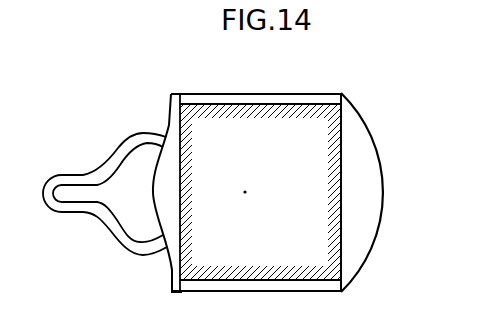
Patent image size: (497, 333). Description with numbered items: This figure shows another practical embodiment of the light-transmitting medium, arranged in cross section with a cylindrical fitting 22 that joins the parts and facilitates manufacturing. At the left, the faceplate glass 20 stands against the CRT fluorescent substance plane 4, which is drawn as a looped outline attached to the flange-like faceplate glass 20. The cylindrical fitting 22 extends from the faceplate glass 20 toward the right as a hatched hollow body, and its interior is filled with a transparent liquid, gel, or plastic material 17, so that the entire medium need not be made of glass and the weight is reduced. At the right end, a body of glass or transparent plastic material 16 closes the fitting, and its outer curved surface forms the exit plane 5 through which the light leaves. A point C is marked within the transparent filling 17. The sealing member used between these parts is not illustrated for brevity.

The CRT fluorescent substance plane 4 is at (152, 192).
The exit plane 5 is at (369, 128).
The glass or transparent plastic material 16 is at (350, 117).
The transparent liquid, gel, or plastic material 17 is at (253, 127).
The faceplate glass 20 is at (173, 118).
The cylindrical fitting 22 is at (288, 100).
The center point C is at (254, 193).